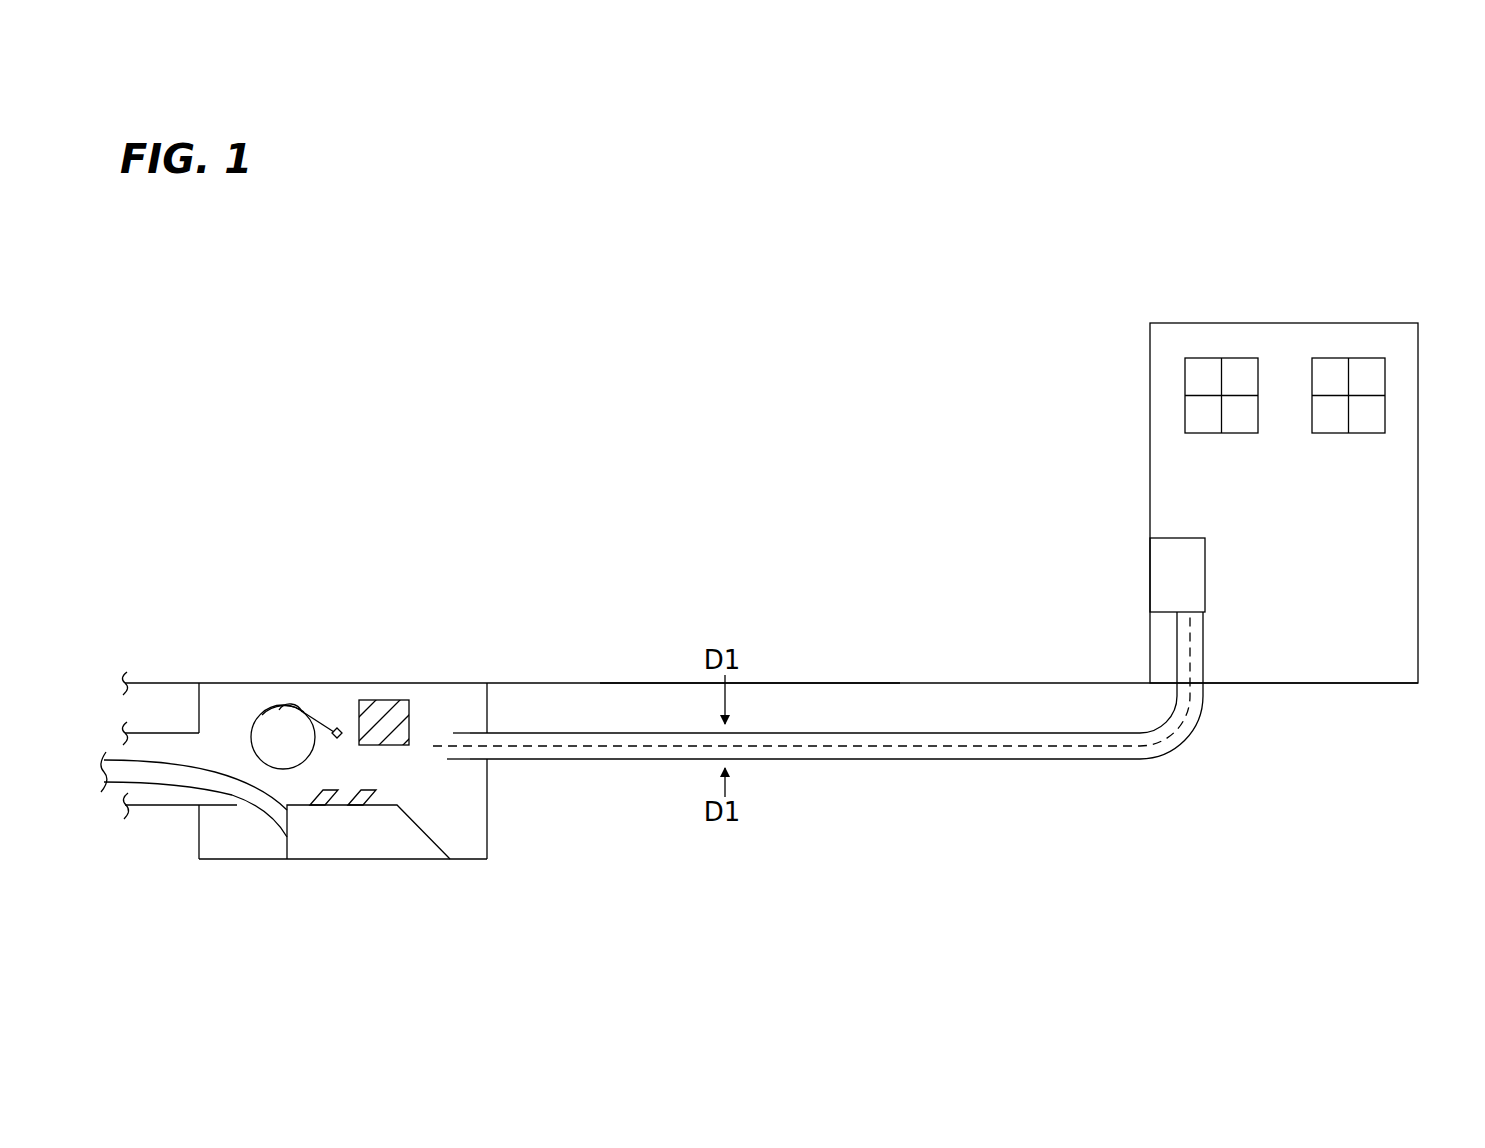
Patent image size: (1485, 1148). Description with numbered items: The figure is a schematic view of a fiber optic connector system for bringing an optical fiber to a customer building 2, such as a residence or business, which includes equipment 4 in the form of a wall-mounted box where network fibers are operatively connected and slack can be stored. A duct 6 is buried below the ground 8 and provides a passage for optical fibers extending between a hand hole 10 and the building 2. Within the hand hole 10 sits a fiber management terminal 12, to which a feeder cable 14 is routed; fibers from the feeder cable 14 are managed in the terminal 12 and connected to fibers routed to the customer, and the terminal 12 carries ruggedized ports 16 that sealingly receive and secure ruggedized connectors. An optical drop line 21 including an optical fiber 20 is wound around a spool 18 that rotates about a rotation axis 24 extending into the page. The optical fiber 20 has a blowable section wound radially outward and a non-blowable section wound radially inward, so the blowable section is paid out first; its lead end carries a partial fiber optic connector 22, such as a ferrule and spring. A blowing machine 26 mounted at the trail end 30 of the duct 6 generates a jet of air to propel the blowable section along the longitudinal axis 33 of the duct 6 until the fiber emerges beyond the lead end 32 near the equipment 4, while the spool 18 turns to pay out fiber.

The customer building 2 is at (1446, 296).
The equipment 4 is at (1175, 538).
The duct 6 is at (857, 733).
The ground 8 is at (738, 683).
The hand hole 10 is at (466, 694).
The fiber management terminal 12 is at (424, 832).
The feeder cable 14 is at (184, 774).
The ruggedized ports 16 is at (314, 797).
The spool 18 is at (268, 712).
The optical fiber 20 is at (310, 718).
The optical drop line 21 is at (296, 705).
The partial fiber optic connector 22 is at (341, 728).
The rotation axis 24 is at (282, 738).
The blowing machine 26 is at (388, 700).
The trail end 30 is at (455, 733).
The lead end 32 is at (1202, 632).
The longitudinal axis 33 is at (1000, 747).